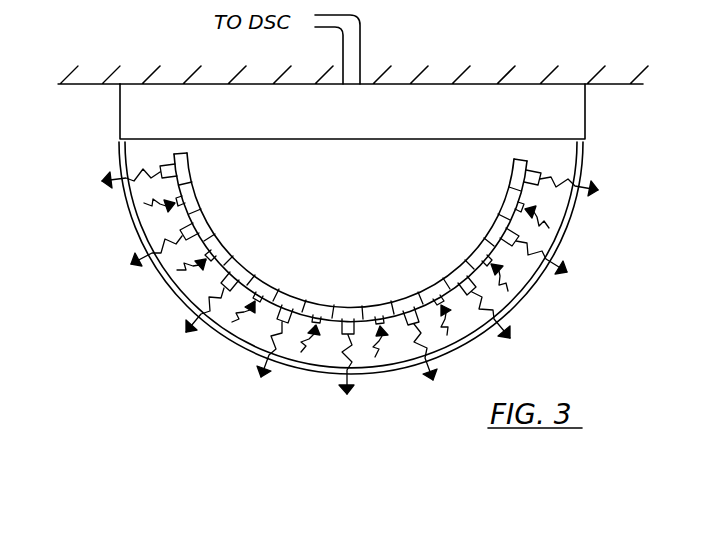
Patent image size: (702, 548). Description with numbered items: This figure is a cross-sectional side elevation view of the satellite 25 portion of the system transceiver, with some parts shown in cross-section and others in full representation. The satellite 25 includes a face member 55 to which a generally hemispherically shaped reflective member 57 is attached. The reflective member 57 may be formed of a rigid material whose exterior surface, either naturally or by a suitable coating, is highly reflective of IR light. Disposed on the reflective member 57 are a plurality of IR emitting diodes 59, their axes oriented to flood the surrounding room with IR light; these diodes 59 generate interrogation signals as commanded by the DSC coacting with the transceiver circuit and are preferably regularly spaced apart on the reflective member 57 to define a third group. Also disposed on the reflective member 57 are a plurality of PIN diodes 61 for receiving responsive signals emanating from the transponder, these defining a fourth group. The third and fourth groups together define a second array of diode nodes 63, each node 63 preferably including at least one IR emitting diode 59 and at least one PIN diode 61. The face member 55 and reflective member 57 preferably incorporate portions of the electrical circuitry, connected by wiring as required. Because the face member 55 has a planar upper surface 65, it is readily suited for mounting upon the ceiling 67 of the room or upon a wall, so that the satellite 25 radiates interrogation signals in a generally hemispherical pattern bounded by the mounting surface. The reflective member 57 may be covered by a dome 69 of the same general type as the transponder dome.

The satellite 25 is at (142, 329).
The face member 55 is at (296, 142).
The reflective member 57 is at (530, 150).
The IR emitting diodes 59 is at (243, 338).
The PIN diodes 61 is at (326, 370).
The diode nodes 63 is at (118, 278).
The planar upper surface 65 is at (397, 84).
The ceiling 67 is at (78, 86).
The dome 69 is at (278, 365).